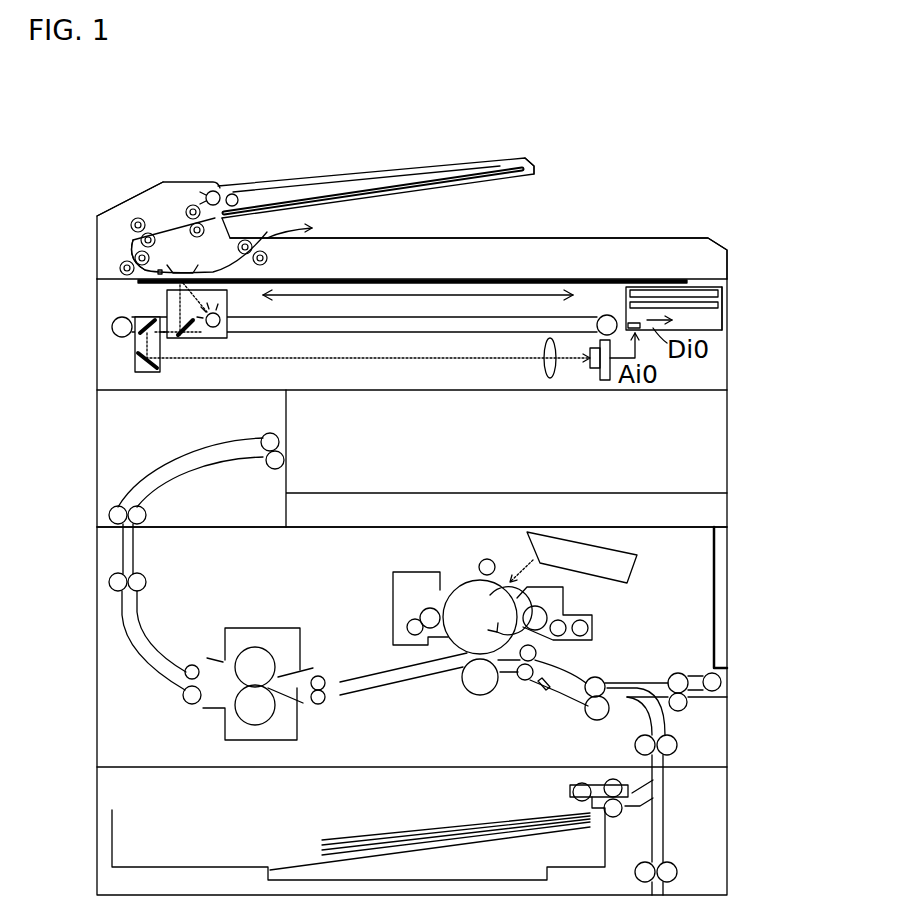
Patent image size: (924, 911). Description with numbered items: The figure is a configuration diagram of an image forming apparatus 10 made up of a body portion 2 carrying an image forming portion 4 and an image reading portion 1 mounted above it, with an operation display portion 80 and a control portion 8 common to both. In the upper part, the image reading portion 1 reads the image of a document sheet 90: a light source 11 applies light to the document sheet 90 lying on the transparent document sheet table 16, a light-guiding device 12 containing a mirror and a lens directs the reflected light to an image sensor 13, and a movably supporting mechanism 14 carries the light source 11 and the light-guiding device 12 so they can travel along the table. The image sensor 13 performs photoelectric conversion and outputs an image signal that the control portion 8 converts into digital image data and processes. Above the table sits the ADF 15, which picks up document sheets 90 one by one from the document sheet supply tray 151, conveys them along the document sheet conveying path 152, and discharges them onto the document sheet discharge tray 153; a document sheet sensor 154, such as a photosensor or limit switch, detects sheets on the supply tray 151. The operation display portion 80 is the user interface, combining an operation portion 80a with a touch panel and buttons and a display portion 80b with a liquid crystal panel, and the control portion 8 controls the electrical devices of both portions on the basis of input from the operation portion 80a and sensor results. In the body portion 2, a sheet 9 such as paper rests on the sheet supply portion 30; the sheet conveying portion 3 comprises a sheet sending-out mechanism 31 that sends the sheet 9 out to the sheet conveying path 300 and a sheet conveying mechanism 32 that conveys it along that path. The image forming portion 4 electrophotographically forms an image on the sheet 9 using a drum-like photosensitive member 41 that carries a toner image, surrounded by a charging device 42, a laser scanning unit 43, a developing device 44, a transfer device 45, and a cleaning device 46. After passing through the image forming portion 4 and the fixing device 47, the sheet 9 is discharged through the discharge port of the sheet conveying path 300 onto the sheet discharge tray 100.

The image forming apparatus 10 is at (735, 148).
The image reading portion 1 is at (101, 205).
The ADF 15 is at (146, 203).
The document sheet 90 is at (398, 172).
The document sheet sensor 154 is at (352, 210).
The document sheet supply tray 151 is at (538, 170).
The document sheet conveying path 152 is at (127, 250).
The document sheet discharge tray 153 is at (487, 238).
The transparent document sheet table 16 is at (597, 278).
The movably supporting mechanism 14 is at (430, 314).
The light source 11 is at (217, 328).
The light-guiding device 12 is at (160, 370).
The image sensor 13 is at (606, 380).
The operation display portion 80 is at (713, 292).
The operation portion 80a is at (707, 275).
The display portion 80b is at (722, 306).
The control portion 8 is at (722, 328).
The sheet discharge tray 100 is at (506, 458).
The sheet conveying mechanism 32 is at (262, 434).
The image forming portion 4 is at (146, 560).
The body portion 2 is at (738, 573).
The photosensitive member 41 is at (457, 582).
The charging device 42 is at (494, 560).
The laser scanning unit 43 is at (637, 574).
The developing device 44 is at (567, 597).
The transfer device 45 is at (480, 695).
The cleaning device 46 is at (427, 572).
The fixing device 47 is at (203, 713).
The sheet conveying path 300 is at (578, 712).
The sheet conveying portion 3 is at (712, 862).
The sheet supply portion 30 is at (112, 820).
The sheet 9 is at (394, 828).
The sheet sending-out mechanism 31 is at (630, 818).